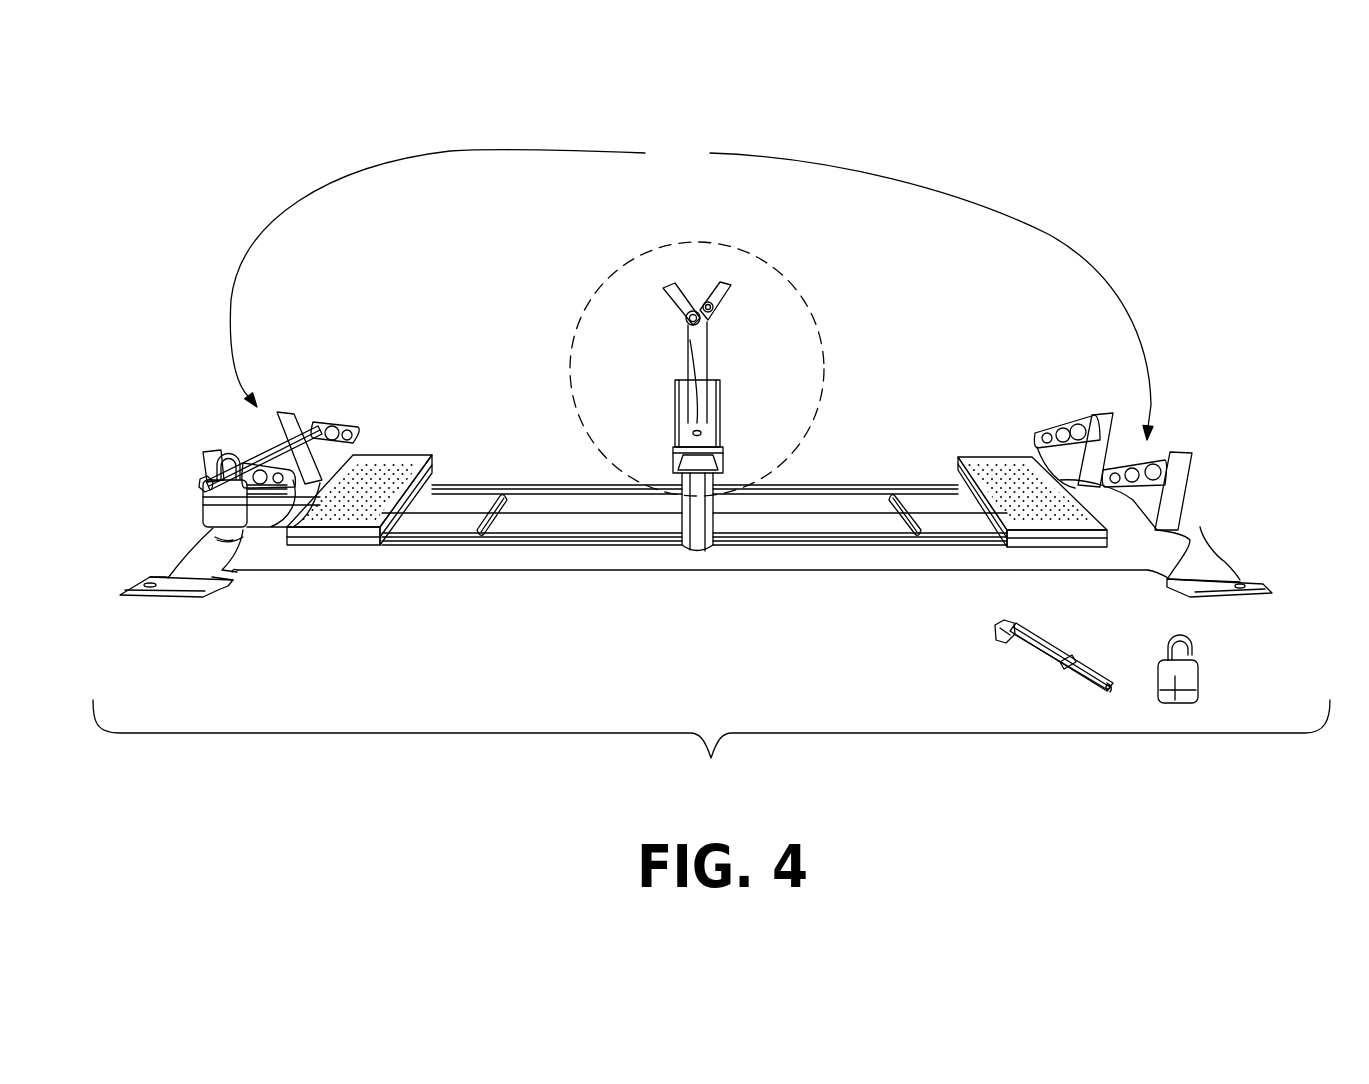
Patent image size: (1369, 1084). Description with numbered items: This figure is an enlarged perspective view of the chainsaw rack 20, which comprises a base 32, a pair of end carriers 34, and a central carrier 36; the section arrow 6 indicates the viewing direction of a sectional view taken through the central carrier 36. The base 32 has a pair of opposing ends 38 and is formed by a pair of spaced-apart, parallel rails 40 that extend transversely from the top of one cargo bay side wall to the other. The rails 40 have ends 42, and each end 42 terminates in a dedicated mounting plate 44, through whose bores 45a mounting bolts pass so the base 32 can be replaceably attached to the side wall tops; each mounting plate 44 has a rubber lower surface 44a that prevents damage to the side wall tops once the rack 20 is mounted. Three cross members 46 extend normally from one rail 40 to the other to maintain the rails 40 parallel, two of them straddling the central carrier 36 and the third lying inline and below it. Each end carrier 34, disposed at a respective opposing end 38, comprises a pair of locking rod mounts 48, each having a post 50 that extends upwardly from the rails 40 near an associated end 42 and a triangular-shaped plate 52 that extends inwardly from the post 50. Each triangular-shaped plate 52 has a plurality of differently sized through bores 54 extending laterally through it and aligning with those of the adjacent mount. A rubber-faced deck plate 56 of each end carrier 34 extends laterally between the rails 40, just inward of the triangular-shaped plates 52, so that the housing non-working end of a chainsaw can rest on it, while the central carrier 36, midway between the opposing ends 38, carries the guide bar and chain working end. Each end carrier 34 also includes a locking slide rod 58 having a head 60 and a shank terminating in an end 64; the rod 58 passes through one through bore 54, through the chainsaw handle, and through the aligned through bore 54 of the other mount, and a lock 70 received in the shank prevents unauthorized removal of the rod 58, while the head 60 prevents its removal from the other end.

The section line 6 is at (841, 374).
The rack 20 is at (524, 312).
The base 32 is at (773, 586).
The end carriers 34 is at (691, 287).
The central carrier 36 is at (675, 279).
The opposing ends 38 is at (245, 585).
The rails 40 is at (553, 531).
The ends 42 is at (176, 563).
The dedicated mounting plate 44 is at (156, 616).
The rubber lower surface 44a is at (186, 600).
The bores 45a is at (148, 583).
The cross members 46 is at (684, 515).
The locking rod mounts 48 is at (256, 433).
The post 50 is at (207, 470).
The triangular-shaped plate 52 is at (246, 438).
The through bores 54 is at (339, 416).
The rubber-faced deck plate 56 is at (360, 560).
The locking slide rod 58 is at (203, 482).
The head 60 is at (995, 632).
The end 64 is at (1108, 692).
The lock 70 is at (207, 505).